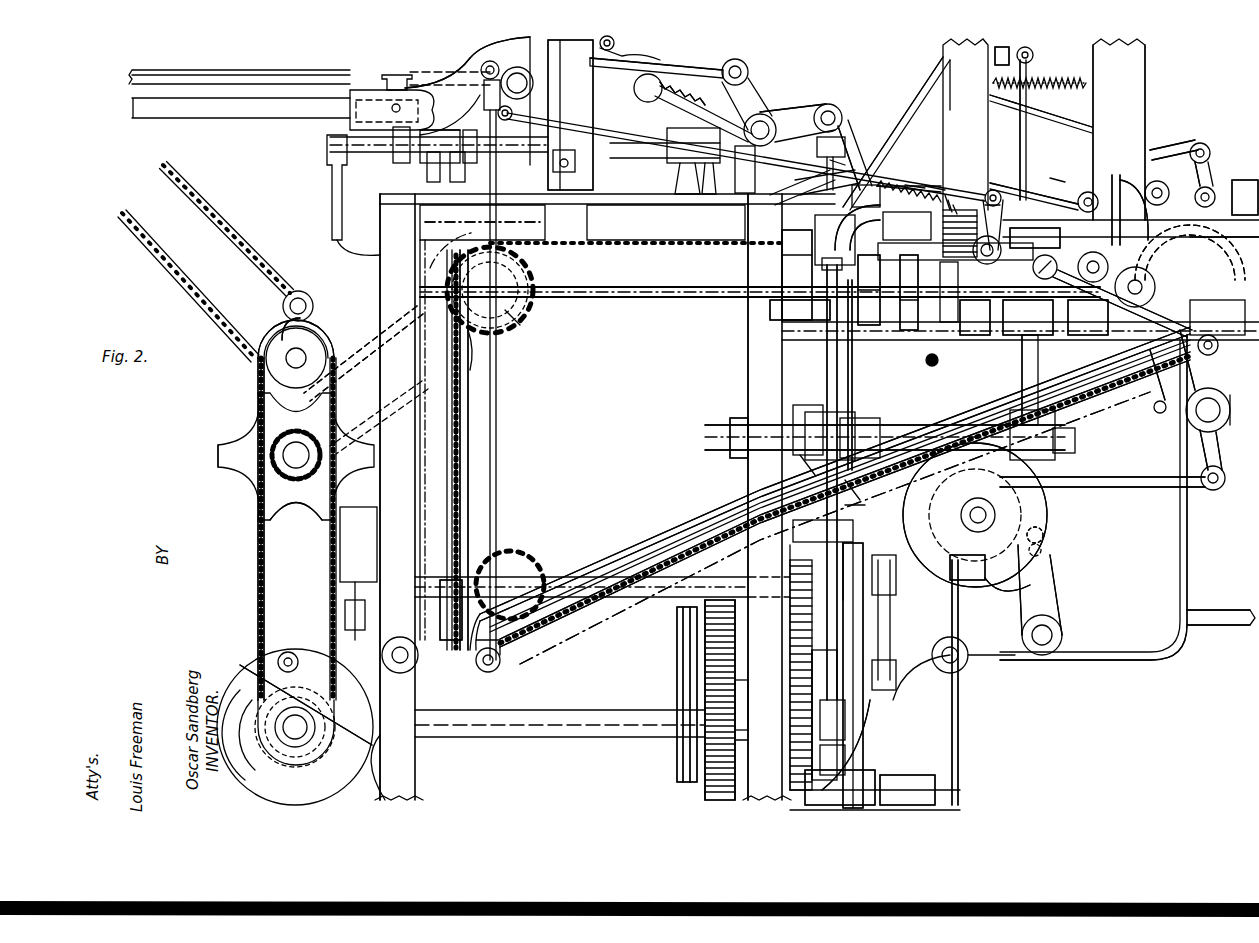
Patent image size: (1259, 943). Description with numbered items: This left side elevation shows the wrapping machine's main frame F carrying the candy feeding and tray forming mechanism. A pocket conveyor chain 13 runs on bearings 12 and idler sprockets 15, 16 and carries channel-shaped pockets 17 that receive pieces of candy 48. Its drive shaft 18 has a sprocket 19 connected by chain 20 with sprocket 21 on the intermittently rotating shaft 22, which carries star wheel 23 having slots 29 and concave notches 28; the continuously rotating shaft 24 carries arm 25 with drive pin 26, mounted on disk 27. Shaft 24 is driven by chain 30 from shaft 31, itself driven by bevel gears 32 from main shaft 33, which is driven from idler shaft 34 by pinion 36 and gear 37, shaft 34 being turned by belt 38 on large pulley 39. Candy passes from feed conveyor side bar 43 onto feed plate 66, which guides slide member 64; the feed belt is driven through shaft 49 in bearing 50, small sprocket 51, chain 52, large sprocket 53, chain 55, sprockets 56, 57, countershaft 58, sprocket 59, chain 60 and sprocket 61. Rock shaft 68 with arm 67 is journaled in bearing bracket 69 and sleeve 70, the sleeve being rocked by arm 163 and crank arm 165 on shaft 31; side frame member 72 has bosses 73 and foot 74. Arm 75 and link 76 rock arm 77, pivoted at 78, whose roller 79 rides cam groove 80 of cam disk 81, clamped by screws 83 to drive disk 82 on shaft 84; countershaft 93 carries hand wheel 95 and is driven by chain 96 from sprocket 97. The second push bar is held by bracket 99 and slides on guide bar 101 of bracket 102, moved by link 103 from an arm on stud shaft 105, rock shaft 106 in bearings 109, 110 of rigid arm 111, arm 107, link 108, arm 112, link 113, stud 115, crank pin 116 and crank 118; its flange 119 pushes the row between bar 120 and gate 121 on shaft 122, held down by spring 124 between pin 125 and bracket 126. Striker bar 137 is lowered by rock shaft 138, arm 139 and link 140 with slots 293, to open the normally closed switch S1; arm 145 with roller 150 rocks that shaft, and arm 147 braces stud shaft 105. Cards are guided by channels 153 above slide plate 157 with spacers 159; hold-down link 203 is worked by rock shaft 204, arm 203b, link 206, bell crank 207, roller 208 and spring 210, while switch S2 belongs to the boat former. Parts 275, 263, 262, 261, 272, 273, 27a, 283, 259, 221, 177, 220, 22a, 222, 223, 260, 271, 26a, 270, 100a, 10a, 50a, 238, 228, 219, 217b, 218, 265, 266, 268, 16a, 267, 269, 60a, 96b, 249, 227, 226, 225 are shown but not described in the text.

The guide rails 275 is at (243, 105).
The housing 263 is at (500, 72).
The roller 262 is at (515, 75).
The vertical rod 261 is at (488, 98).
The lever arm 272 is at (630, 48).
The pivot 273 is at (745, 68).
The spring 27a is at (700, 100).
The arm 139 is at (800, 112).
The link 103 is at (830, 102).
The link 140 is at (852, 125).
The rock shaft 138 is at (762, 116).
The rock shaft 204 is at (990, 52).
The arm 203b is at (1018, 60).
The spring 210 is at (1060, 80).
The rod 283 is at (945, 110).
The link 206 is at (1060, 115).
The channel-shaped guides 153 is at (1140, 65).
The hold-down link 203 is at (1018, 116).
The slots 293 is at (868, 150).
The stationary bracket 126 is at (948, 195).
The gate 121 is at (950, 200).
The shaft 122 is at (955, 205).
The pin 125 is at (1000, 200).
The link 259 is at (1000, 195).
The pieces of candy 48 is at (988, 192).
The lever 221 is at (1175, 148).
The bell crank 207 is at (1210, 148).
The roller 208 is at (1215, 180).
The slide plate 157 is at (1238, 182).
The roller 177 is at (1165, 185).
The spacers 159 is at (1200, 195).
The rod 220 is at (1118, 178).
The switch S2 is at (1128, 188).
The link 22a is at (1058, 178).
The rod 222 is at (1040, 195).
The pivot 223 is at (1085, 192).
The switch S1 is at (890, 185).
The spring 124 is at (915, 183).
The bar 120 is at (897, 183).
The rod 260 is at (935, 190).
The connecting rod 271 is at (580, 100).
The block 26a is at (490, 175).
The post 270 is at (620, 194).
The guide bar 101 is at (840, 160).
The candy striker bar 137 is at (810, 170).
The pipe 100a is at (840, 205).
The flange 119 is at (850, 220).
The sprocket 56 is at (530, 216).
The chain 52 is at (790, 240).
The small sprocket 51 is at (790, 258).
The large sprocket 53 is at (800, 310).
The chain 13 is at (628, 248).
The shaft 18 is at (525, 262).
The sprocket 19 is at (478, 345).
The gear 10a is at (520, 325).
The shaft 50a is at (590, 298).
The chain 55 is at (470, 422).
The bosses 73 is at (825, 342).
The triangular shaped bracket 102 is at (850, 330).
The bearing 109 is at (762, 425).
The main frame F is at (748, 378).
The rock shaft 106 is at (720, 450).
The arm 107 is at (800, 460).
The link 108 is at (800, 478).
The pin 238 is at (940, 365).
The rigid arm 111 is at (1040, 400).
The bearing 110 is at (1045, 415).
The shaft 84 is at (1030, 465).
The clamp screws 83 is at (975, 470).
The bearings 12 is at (1140, 345).
The arm 67 is at (1190, 375).
The sleeve 70 is at (1208, 405).
The bearing bracket 69 is at (1225, 400).
The pin 228 is at (1155, 412).
The rock shaft 68 is at (1195, 415).
The arm 75 is at (1222, 478).
The link 76 is at (1125, 488).
The roller 79 is at (1045, 532).
The cam groove 80 is at (1048, 545).
The arm 77 is at (1058, 580).
The pivot 78 is at (1062, 632).
The drive disk 82 is at (1005, 575).
The cam disk 81 is at (995, 588).
The wheel 219 is at (950, 535).
The side frame member 72 is at (1187, 568).
The countershaft 93 is at (1222, 626).
The roller 217b is at (965, 665).
The rod 218 is at (960, 705).
The arm 112 is at (855, 495).
The stud shaft 105 is at (855, 515).
The roller 150 is at (800, 540).
The sprocket 59 is at (790, 555).
The arm 147 is at (800, 588).
The arm 145 is at (850, 590).
The link 113 is at (888, 620).
The chain 60 is at (735, 660).
The sprocket 97 is at (795, 680).
The idler shaft 34 is at (735, 688).
The pinion 36 is at (740, 700).
The chain 96 is at (800, 670).
The crank 118 is at (828, 700).
The sprocket 61 is at (738, 745).
The gear 37 is at (725, 778).
The foot 74 is at (850, 778).
The crank pin 116 is at (870, 740).
The stud 115 is at (915, 790).
The belt 38 is at (678, 615).
The large pulley 39 is at (690, 655).
The pivot 265 is at (465, 670).
The roller 266 is at (400, 675).
The arm 268 is at (400, 762).
The main shaft 33 is at (522, 738).
The pockets 17 is at (588, 625).
The chain 16a is at (655, 560).
The countershaft 58 is at (575, 575).
The sprocket 57 is at (465, 580).
The idler sprocket 15 is at (515, 565).
The roller 267 is at (292, 650).
The crank arm 165 is at (250, 660).
The slot 269 is at (240, 705).
The chain 30 is at (258, 607).
The shaft 31 is at (287, 750).
The bevel gears 32 is at (300, 752).
The concave notches 28 is at (295, 525).
The intermittently rotating shaft 22 is at (245, 495).
The star wheel 23 is at (258, 465).
The sprocket 21 is at (290, 458).
The slots 29 is at (372, 460).
The chain 20 is at (390, 358).
The continuously rotating shaft 24 is at (292, 360).
The arm 25 is at (282, 315).
The disk 27 is at (270, 345).
The drive pin 26 is at (312, 302).
The candy feed plate 66 is at (1038, 268).
The slide member 64 is at (1085, 264).
The roller 60a is at (1135, 275).
The side bar 43 is at (1040, 240).
The bar 96b is at (915, 285).
The hand wheel 95 is at (918, 300).
The bearing 50 is at (885, 310).
The bracket 99 is at (862, 295).
The shaft 49 is at (955, 318).
The idler sprocket 16 is at (1065, 320).
The block 249 is at (1003, 290).
The shelf 227 is at (1205, 243).
The arc 226 is at (1210, 258).
The arc 225 is at (1210, 270).
The arm 163 is at (1212, 320).